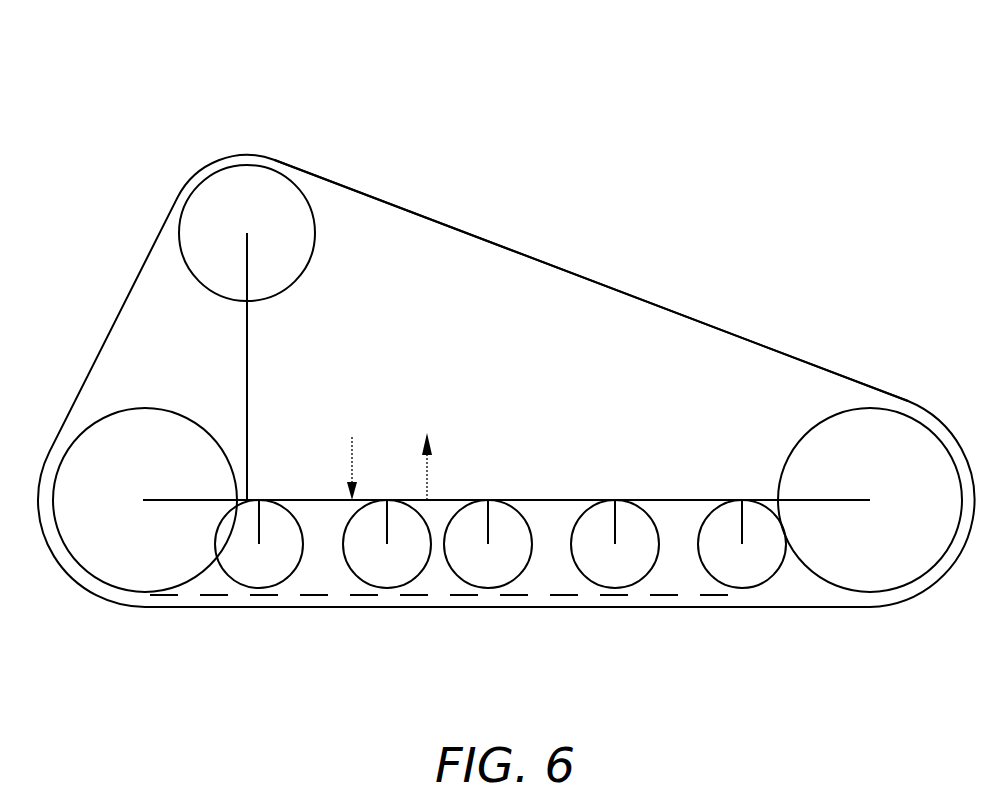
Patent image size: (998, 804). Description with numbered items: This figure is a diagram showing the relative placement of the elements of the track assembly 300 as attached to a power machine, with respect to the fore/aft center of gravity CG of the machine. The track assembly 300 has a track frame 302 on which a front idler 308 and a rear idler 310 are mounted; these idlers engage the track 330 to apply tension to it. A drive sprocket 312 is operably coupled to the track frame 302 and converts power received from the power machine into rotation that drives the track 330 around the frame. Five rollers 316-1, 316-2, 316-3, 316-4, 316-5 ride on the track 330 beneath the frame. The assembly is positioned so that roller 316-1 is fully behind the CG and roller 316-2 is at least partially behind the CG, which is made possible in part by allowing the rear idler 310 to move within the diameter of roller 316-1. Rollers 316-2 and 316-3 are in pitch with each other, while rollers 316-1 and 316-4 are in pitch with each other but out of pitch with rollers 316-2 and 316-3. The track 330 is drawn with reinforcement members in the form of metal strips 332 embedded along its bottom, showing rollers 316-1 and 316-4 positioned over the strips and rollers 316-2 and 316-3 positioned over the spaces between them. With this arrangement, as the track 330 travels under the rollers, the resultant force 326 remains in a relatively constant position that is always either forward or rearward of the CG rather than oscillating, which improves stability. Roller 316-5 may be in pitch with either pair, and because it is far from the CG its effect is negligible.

The track assembly 300 is at (733, 90).
The track frame 302 is at (536, 500).
The front idler 308 is at (873, 428).
The rear idler 310 is at (127, 578).
The drive sprocket 312 is at (207, 208).
The roller 316-1 is at (235, 587).
The roller 316-2 is at (378, 577).
The roller 316-3 is at (493, 575).
The roller 316-4 is at (634, 583).
The roller 316-5 is at (770, 570).
The resultant force 326 is at (448, 466).
The track 330 is at (598, 283).
The metal strips 332 is at (260, 597).
The center of gravity CG is at (353, 456).